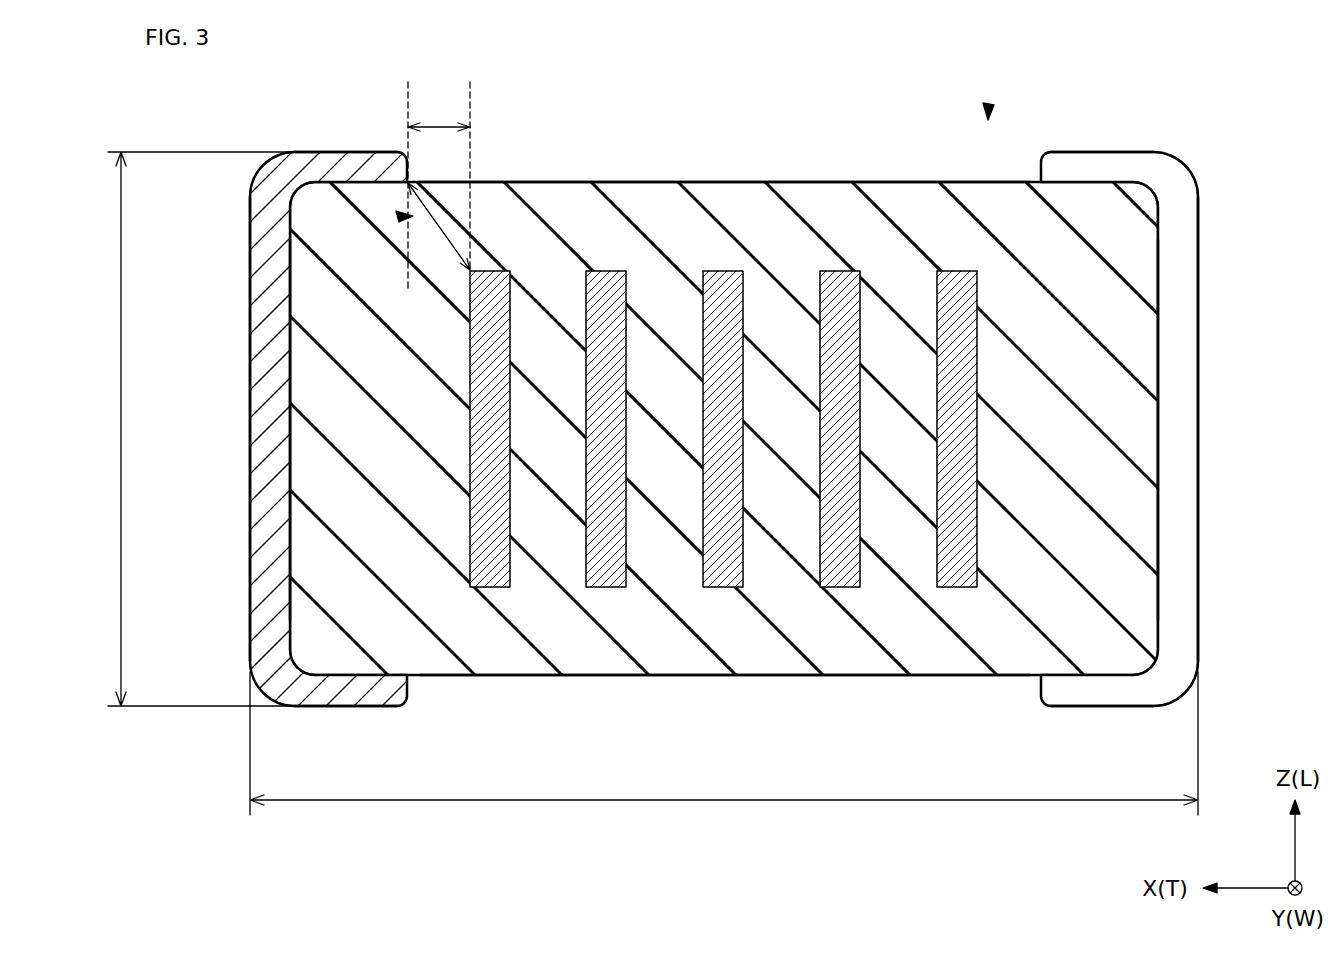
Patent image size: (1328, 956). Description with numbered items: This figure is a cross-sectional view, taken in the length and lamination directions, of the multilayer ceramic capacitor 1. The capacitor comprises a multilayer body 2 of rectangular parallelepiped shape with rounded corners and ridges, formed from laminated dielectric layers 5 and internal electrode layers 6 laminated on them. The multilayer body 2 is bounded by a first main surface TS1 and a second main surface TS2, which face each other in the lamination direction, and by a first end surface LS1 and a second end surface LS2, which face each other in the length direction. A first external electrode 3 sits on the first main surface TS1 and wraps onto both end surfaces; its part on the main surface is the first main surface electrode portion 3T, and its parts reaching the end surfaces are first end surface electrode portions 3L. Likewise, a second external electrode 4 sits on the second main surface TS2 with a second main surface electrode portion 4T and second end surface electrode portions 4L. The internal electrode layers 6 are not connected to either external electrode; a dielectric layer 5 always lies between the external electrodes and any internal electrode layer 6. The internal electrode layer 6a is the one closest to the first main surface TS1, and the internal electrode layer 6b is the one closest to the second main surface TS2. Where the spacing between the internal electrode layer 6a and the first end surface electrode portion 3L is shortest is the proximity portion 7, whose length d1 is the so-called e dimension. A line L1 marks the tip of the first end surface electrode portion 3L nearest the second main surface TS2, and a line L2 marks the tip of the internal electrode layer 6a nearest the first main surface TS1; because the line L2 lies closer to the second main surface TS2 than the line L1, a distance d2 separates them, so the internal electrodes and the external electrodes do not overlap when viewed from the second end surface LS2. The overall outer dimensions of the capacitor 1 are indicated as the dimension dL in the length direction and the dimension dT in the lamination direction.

The multilayer ceramic capacitor 1 is at (988, 112).
The multilayer body 2 is at (724, 432).
The first external electrode 3 is at (294, 431).
The second external electrode 4 is at (1158, 432).
The dielectric layer 5 is at (682, 650).
The internal electrode layer 6 is at (723, 508).
The internal electrode layer 6a is at (494, 580).
The internal electrode layer 6b is at (962, 580).
The proximity portion 7 is at (404, 220).
The first end surface electrode portion 3L is at (343, 152).
The second end surface electrode portion 4L is at (1108, 152).
The first main surface electrode portion 3T is at (250, 458).
The second main surface electrode portion 4T is at (1198, 458).
The first main surface TS1 is at (290, 362).
The second main surface TS2 is at (1158, 368).
The first end surface LS1 is at (777, 676).
The second end surface LS2 is at (797, 182).
The line L1 is at (408, 90).
The line L2 is at (470, 90).
The length d1 is at (440, 228).
The distance d2 is at (440, 127).
The dimension dL is at (185, 429).
The dimension dT is at (724, 755).